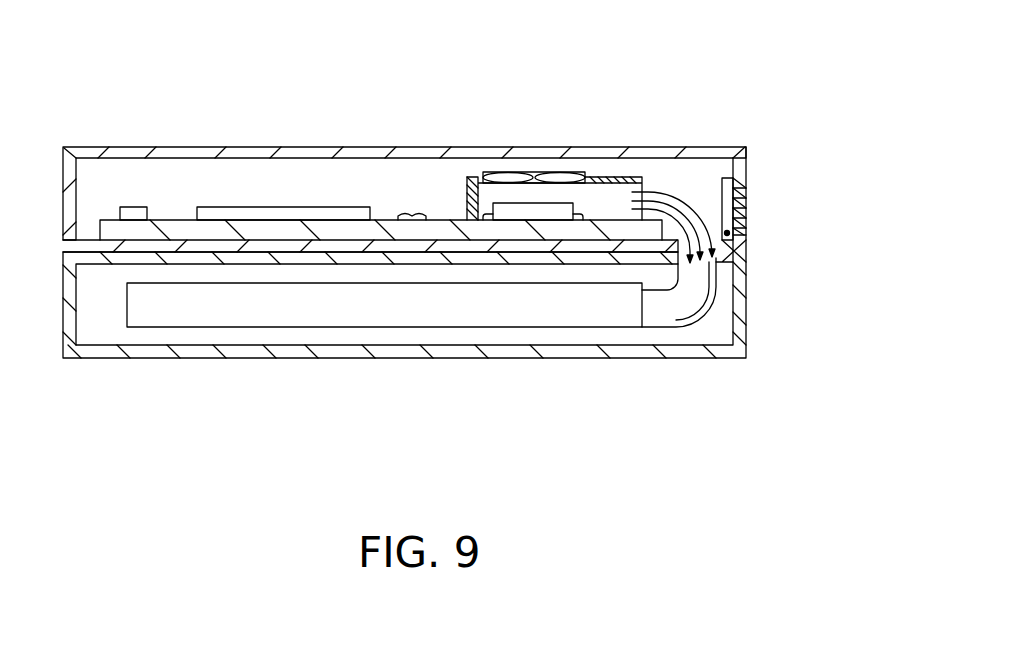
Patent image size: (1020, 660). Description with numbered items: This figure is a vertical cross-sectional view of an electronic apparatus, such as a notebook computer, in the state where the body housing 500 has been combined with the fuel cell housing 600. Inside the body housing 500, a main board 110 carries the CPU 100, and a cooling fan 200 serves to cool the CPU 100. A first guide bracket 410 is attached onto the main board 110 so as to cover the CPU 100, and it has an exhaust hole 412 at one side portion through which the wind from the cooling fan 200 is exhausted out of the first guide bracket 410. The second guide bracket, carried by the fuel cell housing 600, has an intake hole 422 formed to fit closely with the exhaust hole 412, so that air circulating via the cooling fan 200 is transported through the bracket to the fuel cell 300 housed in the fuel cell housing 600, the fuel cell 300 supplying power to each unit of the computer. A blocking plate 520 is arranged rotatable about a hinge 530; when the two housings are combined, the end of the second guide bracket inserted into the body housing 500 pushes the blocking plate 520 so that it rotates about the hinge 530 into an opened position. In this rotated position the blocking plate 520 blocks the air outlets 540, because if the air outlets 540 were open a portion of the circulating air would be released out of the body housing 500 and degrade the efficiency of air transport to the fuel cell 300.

The CPU 100 is at (552, 206).
The main board 110 is at (280, 238).
The cooling fan 200 is at (502, 174).
The fuel cell 300 is at (313, 310).
The first guide bracket 410 is at (470, 178).
The exhaust hole 412 is at (648, 197).
The intake hole 422 is at (690, 237).
The body housing 500 is at (178, 147).
The blocking plate 520 is at (727, 207).
The hinge 530 is at (746, 247).
The air outlets 540 is at (746, 182).
The fuel cell housing 600 is at (437, 352).